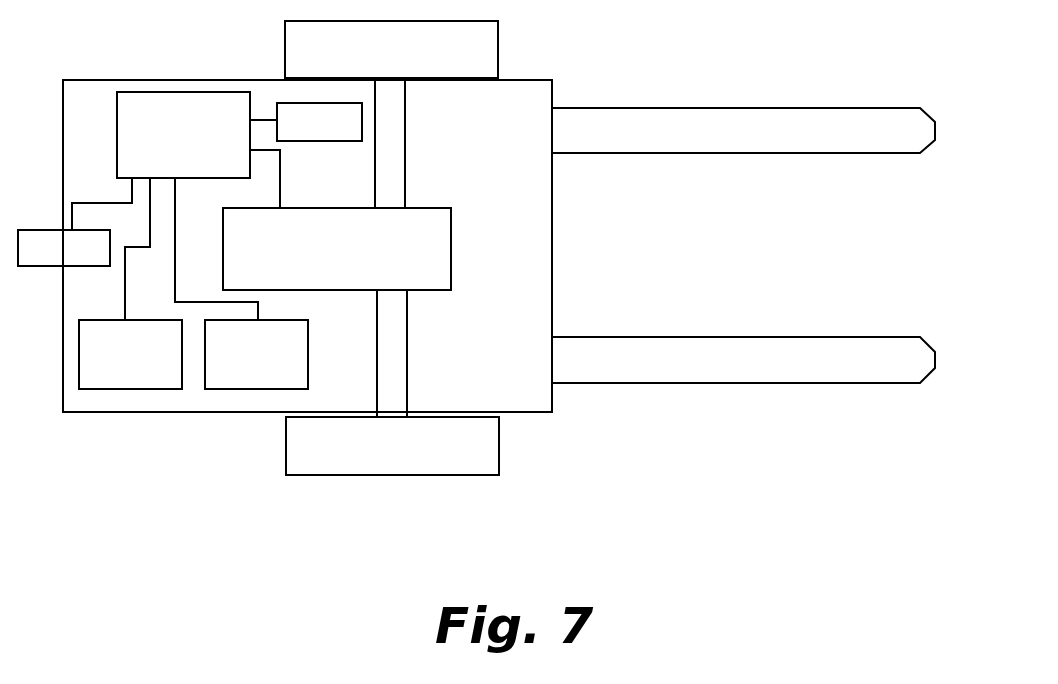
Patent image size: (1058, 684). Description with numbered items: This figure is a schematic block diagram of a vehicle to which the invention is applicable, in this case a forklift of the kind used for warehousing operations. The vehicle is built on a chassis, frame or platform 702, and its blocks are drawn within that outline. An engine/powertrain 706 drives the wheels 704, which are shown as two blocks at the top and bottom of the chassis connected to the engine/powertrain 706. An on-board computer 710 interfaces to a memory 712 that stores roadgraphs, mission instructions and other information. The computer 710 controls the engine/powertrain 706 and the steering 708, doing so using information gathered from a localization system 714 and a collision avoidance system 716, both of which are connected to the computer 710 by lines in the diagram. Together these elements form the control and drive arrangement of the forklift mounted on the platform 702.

The chassis, frame or platform 702 is at (499, 247).
The wheels 704 is at (392, 248).
The engine/powertrain 706 is at (337, 249).
The steering 708 is at (64, 248).
The on-board computer 710 is at (183, 135).
The memory 712 is at (319, 122).
The localization system 714 is at (130, 354).
The collision avoidance system 716 is at (256, 354).